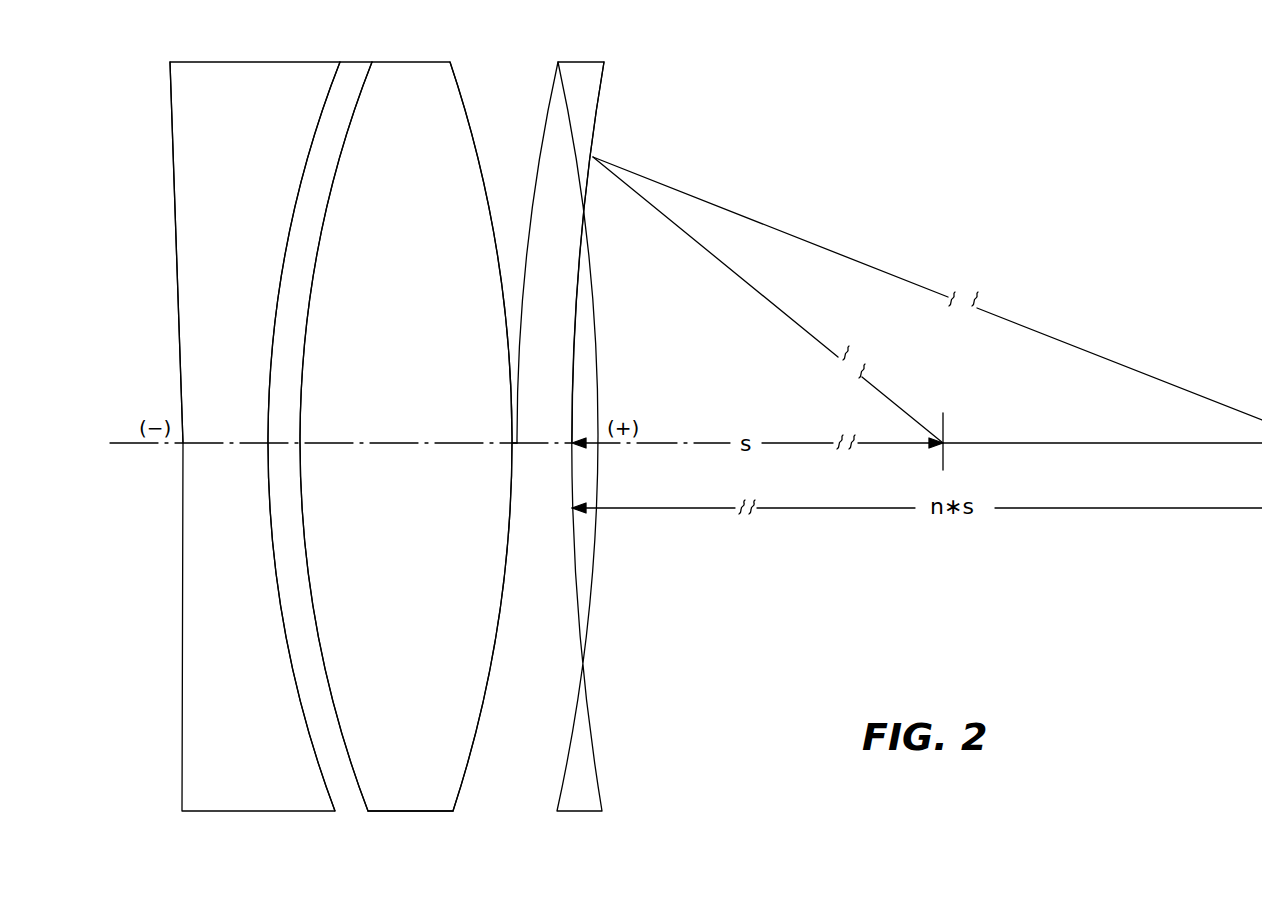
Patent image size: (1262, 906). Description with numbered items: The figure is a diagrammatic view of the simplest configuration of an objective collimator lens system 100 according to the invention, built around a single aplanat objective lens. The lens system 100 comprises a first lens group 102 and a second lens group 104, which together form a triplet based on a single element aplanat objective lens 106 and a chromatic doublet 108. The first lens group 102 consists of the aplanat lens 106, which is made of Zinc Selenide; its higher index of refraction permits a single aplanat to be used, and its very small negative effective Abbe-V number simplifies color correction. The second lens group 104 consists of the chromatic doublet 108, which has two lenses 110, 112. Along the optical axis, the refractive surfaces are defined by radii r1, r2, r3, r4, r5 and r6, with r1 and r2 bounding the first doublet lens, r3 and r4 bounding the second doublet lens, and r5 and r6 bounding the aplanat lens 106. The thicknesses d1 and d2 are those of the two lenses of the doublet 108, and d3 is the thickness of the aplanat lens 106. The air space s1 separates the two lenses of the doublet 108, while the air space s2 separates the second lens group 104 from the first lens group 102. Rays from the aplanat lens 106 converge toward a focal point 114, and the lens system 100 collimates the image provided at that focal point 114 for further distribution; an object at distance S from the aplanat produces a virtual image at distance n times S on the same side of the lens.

The objective collimator lens system 100 is at (632, 85).
The first lens group 102 is at (590, 55).
The second lens group 104 is at (360, 54).
The aplanat objective lens 106 is at (576, 666).
The chromatic doublet 108 is at (370, 820).
The lens of chromatic doublet 110 is at (445, 766).
The lens of chromatic doublet 112 is at (200, 597).
The focal point 114 is at (945, 440).
The radius of first refractive surface r1 is at (170, 100).
The radius of second refractive surface r2 is at (336, 78).
The radius of third refractive surface r3 is at (346, 423).
The radius of fourth refractive surface r4 is at (456, 76).
The radius of fifth refractive surface r5 is at (551, 84).
The radius of sixth refractive surface r6 is at (603, 78).
The thickness of first doublet lens d1 is at (218, 455).
The air space between doublet lenses s1 is at (283, 450).
The thickness of second doublet lens d2 is at (396, 443).
The air space between lens groups s2 is at (517, 443).
The thickness of aplanat lens d3 is at (545, 443).